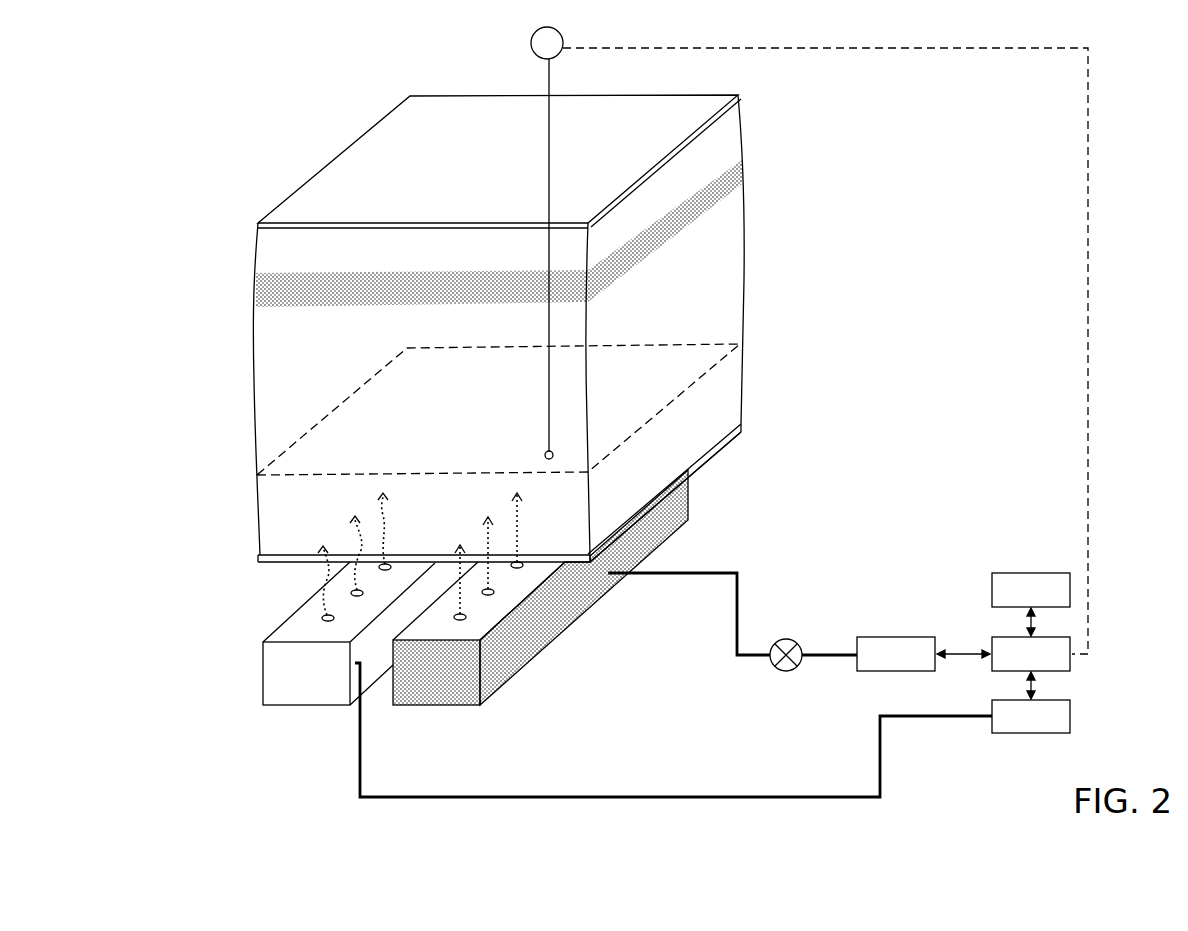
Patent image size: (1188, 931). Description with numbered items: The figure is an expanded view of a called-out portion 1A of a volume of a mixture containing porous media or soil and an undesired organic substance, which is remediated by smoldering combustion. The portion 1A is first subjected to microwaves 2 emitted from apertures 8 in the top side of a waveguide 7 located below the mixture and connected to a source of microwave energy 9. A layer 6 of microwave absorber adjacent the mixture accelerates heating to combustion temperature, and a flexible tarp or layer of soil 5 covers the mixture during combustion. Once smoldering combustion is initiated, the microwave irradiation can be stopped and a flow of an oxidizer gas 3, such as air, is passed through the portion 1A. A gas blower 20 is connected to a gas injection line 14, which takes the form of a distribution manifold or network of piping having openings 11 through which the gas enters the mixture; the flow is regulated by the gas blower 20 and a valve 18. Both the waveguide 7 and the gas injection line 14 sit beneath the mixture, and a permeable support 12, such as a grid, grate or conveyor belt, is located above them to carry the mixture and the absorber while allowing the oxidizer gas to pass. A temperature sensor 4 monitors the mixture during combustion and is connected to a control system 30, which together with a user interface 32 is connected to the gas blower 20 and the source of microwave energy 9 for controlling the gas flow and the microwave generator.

The portion of the volume of the mixture 1A is at (285, 452).
The microwaves 2 is at (360, 562).
The oxidizer gas 3 is at (520, 530).
The temperature sensor 4 is at (563, 42).
The flexible tarp or layer of soil 5 is at (373, 146).
The layer of microwave absorber 6 is at (718, 193).
The waveguide 7 is at (303, 688).
The apertures 8 is at (328, 618).
The source of microwave energy 9 is at (1031, 716).
The openings 11 is at (467, 618).
The support 12 is at (735, 436).
The gas injection line 14 is at (435, 686).
The valve 18 is at (821, 638).
The gas blower 20 is at (923, 654).
The control system 30 is at (1031, 653).
The user interface 32 is at (1031, 590).